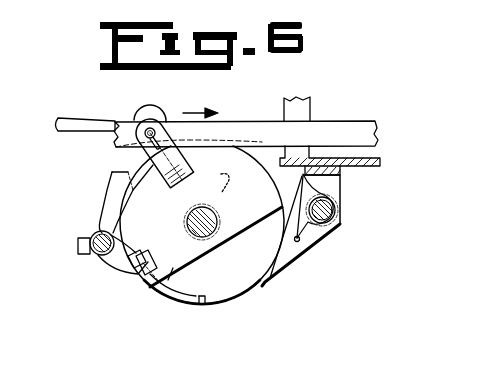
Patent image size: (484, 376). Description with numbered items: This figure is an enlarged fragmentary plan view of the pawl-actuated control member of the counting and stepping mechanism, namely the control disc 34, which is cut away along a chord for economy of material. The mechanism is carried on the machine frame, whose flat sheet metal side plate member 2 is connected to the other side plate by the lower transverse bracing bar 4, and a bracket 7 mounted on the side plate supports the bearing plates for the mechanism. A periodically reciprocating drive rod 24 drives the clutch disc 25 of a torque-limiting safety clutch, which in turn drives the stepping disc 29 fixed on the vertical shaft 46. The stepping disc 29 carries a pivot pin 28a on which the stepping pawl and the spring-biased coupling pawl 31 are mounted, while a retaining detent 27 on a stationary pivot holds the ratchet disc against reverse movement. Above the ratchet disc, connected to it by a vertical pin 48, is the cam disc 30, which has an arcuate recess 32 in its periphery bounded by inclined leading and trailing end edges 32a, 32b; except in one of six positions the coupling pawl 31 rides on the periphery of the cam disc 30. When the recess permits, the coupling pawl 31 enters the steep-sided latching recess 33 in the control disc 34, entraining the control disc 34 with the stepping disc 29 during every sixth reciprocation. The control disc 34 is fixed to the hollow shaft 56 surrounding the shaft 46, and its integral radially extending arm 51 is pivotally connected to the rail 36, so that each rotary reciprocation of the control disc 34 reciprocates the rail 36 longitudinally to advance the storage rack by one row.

The side plate member 2 is at (377, 166).
The lower transverse bracing bar 4 is at (310, 107).
The bracket 7 is at (343, 187).
The drive rod 24 is at (68, 128).
The clutch disc 25 is at (150, 117).
The retaining detent 27 is at (297, 253).
The pivot pin 28a is at (97, 231).
The stepping disc 29 is at (110, 205).
The cam disc 30 is at (233, 296).
The coupling pawl 31 is at (117, 260).
The arcuate recess 32 is at (180, 301).
The leading end edge 32a is at (200, 302).
The trailing end edge 32b is at (135, 253).
The latching recess 33 is at (147, 275).
The control disc 34 is at (172, 272).
The rail 36 is at (260, 127).
The vertical shaft 46 is at (186, 214).
The vertical pin 48 is at (213, 186).
The arm 51 is at (145, 150).
The hollow shaft 56 is at (218, 212).